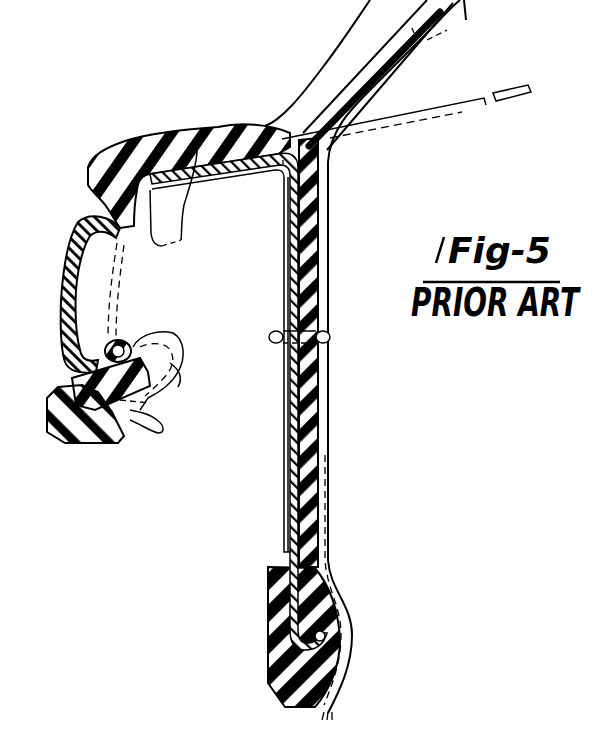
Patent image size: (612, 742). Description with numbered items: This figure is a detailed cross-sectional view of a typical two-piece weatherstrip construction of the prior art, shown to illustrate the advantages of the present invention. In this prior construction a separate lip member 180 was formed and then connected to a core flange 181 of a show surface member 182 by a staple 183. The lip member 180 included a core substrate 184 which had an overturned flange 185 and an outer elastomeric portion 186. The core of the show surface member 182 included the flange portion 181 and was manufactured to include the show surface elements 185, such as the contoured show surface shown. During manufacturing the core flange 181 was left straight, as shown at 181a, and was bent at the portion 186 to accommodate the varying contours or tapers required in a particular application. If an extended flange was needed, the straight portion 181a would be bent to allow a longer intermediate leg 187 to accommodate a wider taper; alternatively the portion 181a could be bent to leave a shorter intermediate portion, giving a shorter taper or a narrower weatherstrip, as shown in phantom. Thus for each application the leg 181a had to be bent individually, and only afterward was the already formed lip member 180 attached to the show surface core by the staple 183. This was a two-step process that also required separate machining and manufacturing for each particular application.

The lip member 180 is at (330, 207).
The core flange 181 is at (288, 271).
The straight portion of core flange 181a is at (470, 102).
The show surface member 182 is at (206, 128).
The staple 183 is at (331, 338).
The core substrate 184 is at (291, 520).
The overturned flange 185 is at (258, 136).
The outer elastomeric portion 186 is at (413, 28).
The intermediate leg 187 is at (197, 140).